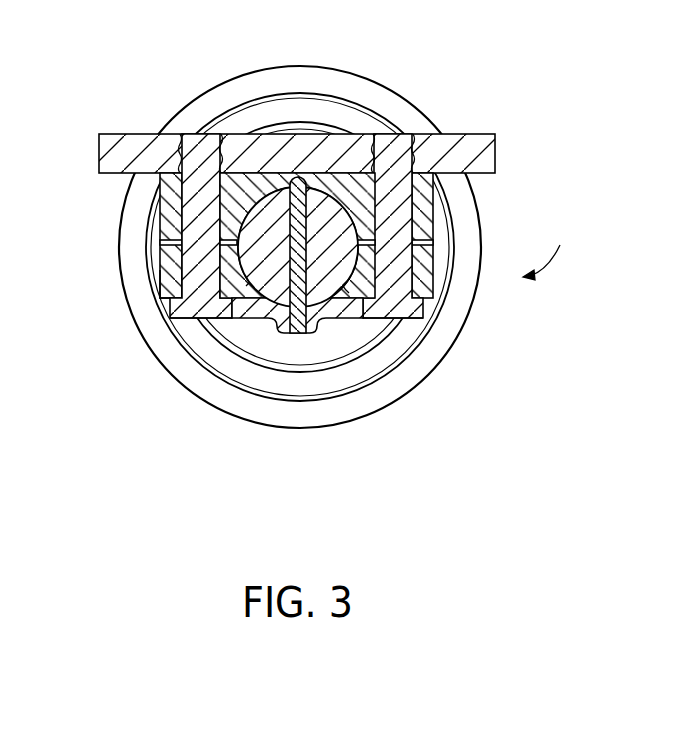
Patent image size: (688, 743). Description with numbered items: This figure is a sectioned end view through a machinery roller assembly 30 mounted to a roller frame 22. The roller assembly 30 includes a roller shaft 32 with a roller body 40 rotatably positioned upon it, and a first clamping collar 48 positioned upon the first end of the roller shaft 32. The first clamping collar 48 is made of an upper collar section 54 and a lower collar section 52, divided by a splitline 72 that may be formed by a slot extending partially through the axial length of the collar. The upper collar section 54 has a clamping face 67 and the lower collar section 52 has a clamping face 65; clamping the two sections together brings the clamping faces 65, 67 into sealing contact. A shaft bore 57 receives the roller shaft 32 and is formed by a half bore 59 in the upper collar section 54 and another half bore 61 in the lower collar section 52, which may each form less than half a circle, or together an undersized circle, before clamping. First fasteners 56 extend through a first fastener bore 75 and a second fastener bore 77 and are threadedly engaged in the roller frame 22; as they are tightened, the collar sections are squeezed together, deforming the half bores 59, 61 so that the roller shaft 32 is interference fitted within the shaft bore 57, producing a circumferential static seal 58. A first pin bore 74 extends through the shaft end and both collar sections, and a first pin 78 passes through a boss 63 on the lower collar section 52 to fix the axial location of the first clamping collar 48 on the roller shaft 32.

The roller frame 22 is at (496, 158).
The roller assembly 30 is at (550, 250).
The roller shaft 32 is at (430, 235).
The roller body 40 is at (236, 420).
The first clamping collar 48 is at (345, 193).
The lower collar section 52 is at (355, 362).
The upper collar section 54 is at (237, 182).
The first fastener 56 is at (195, 352).
The shaft bore 57 is at (392, 372).
The first static seal 58 is at (322, 165).
The half bore 59 is at (345, 220).
The half bore 61 is at (206, 362).
The boss 63 is at (288, 336).
The clamping face 65 is at (172, 213).
The clamping face 67 is at (173, 272).
The splitline 72 is at (172, 242).
The first pin bore 74 is at (316, 300).
The first fastener bore 75 is at (178, 318).
The second fastener bore 77 is at (440, 292).
The first pin 78 is at (303, 177).